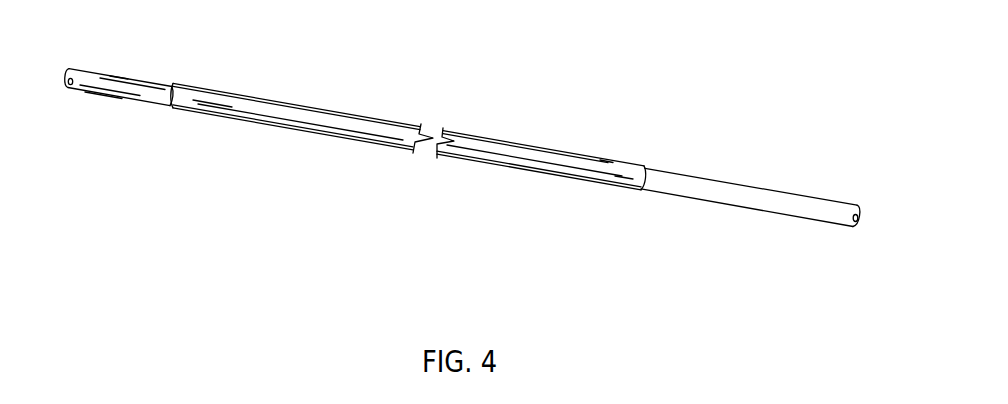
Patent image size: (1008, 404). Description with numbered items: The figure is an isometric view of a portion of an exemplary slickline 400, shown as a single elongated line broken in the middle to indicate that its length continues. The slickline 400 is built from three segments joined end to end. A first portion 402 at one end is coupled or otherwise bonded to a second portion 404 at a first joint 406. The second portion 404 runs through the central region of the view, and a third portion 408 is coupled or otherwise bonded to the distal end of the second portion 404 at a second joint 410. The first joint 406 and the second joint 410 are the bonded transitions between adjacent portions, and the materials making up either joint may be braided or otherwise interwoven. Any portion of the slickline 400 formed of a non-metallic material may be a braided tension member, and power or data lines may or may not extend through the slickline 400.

The slickline 400 is at (630, 94).
The first portion 402 is at (120, 73).
The second portion 404 is at (366, 118).
The first joint 406 is at (223, 94).
The third portion 408 is at (793, 192).
The second joint 410 is at (694, 173).